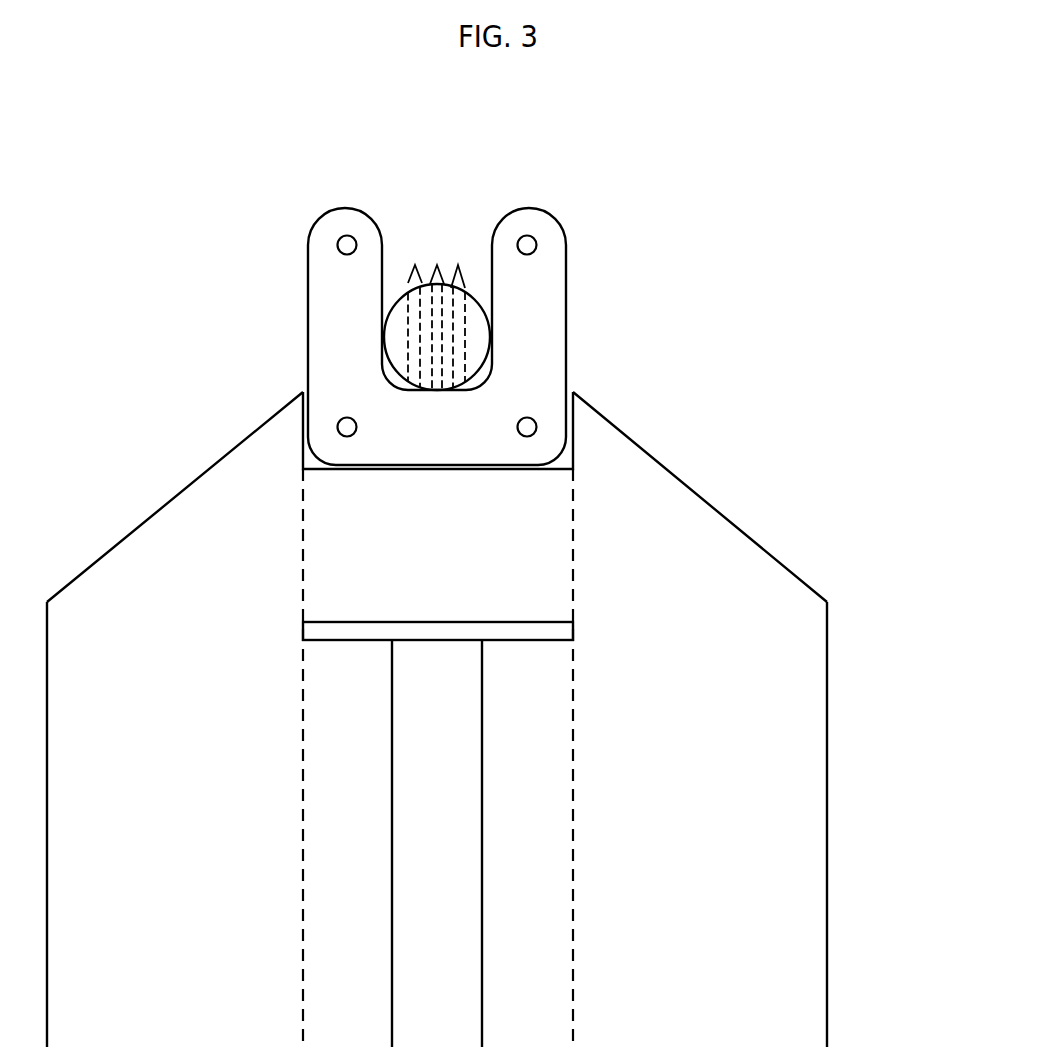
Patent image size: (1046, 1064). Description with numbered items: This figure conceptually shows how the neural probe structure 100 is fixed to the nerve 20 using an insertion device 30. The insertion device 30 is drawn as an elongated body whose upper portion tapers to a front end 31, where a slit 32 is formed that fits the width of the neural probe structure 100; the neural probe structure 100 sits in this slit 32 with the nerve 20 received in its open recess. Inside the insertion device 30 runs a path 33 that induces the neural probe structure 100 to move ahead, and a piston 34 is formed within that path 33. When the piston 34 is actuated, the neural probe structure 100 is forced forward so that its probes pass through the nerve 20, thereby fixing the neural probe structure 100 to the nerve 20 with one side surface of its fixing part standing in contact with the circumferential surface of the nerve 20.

The neural probe structure 100 is at (566, 286).
The nerve 20 is at (389, 300).
The insertion device 30 is at (826, 733).
The front end 31 is at (752, 532).
The slit 32 is at (543, 470).
The path 33 is at (548, 795).
The piston 34 is at (522, 632).